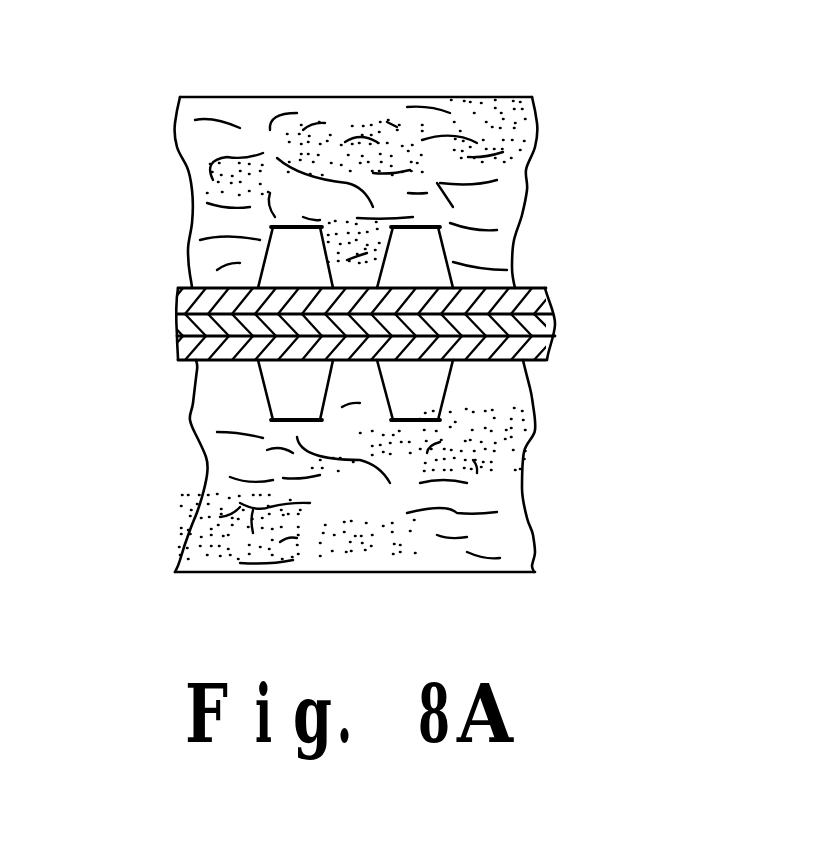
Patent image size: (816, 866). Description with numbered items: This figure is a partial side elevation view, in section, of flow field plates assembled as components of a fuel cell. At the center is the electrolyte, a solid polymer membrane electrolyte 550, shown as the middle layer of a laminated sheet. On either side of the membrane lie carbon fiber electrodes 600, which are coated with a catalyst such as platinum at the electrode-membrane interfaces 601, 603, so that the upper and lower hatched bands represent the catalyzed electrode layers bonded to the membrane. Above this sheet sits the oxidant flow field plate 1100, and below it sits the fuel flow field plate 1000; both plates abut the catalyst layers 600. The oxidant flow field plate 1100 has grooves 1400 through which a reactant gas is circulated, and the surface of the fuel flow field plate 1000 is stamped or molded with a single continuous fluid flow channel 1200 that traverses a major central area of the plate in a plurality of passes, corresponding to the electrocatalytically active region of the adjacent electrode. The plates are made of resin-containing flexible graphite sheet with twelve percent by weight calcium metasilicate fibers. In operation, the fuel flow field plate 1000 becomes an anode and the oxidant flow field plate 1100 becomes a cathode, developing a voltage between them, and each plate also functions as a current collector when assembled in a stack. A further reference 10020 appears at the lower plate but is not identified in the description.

The oxidant flow field plate 1100 is at (377, 93).
The grooves 1400 is at (277, 267).
The carbon fiber electrode 600 is at (381, 331).
The electrode-membrane interface 601 is at (178, 313).
The solid polymer membrane electrolyte 550 is at (552, 324).
The electrode-membrane interface 603 is at (178, 336).
The continuous fluid flow channel 1200 is at (258, 398).
The fuel flow field plate 1000 is at (409, 511).
The substrate bottom surface 10020 is at (505, 573).